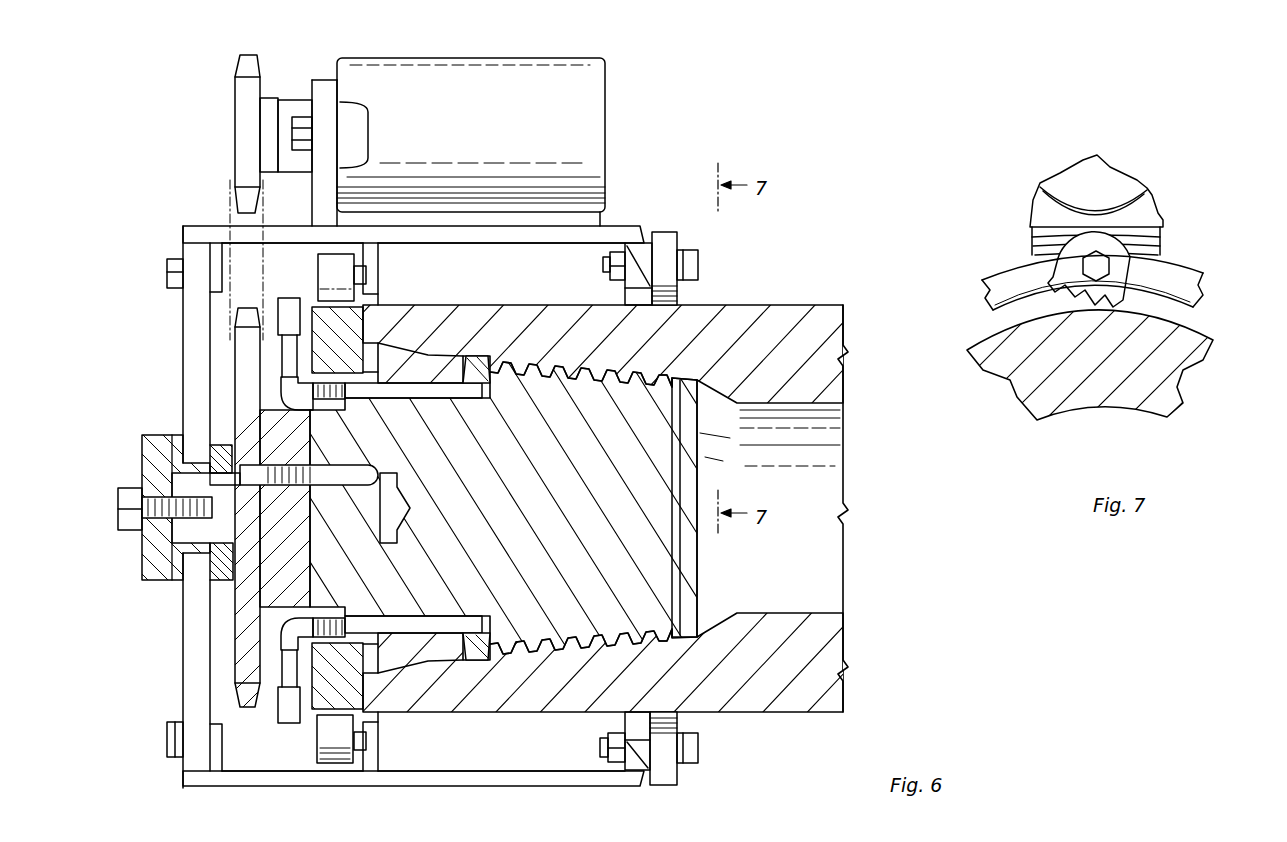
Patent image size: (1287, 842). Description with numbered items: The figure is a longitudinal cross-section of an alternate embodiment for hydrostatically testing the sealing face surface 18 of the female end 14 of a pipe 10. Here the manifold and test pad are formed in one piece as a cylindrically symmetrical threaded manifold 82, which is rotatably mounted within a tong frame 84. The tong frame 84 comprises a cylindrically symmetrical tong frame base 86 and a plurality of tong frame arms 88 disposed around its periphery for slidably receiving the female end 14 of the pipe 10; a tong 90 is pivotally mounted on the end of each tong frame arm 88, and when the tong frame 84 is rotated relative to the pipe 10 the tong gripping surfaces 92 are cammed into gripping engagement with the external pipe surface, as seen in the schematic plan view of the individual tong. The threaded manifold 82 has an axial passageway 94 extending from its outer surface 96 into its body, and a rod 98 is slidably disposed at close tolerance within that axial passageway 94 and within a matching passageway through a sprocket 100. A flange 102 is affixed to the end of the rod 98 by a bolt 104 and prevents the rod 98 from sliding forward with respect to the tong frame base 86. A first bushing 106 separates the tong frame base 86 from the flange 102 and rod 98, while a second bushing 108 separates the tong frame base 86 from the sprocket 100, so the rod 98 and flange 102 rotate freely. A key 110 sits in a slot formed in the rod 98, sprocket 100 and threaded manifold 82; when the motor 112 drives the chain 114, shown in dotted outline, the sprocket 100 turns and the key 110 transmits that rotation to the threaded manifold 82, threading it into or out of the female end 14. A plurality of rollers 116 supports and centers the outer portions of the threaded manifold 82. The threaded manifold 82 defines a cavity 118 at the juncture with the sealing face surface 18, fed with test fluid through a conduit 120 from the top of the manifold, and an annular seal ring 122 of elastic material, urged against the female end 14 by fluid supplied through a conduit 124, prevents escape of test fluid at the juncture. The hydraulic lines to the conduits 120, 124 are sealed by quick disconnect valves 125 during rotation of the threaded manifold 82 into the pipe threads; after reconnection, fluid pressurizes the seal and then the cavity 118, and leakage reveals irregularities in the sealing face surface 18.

In FIG. 6, the pipe 10 is at (797, 313).
In FIG. 7, the pipe 10 is at (1173, 367).
In FIG. 6, the female end 14 is at (517, 315).
In FIG. 6, the sealing face surface 18 is at (385, 318).
In FIG. 6, the threaded manifold 82 is at (635, 580).
In FIG. 6, the tong frame 84 is at (285, 777).
In FIG. 6, the tong frame base 86 is at (193, 328).
In FIG. 6, the tong frame arms 88 is at (620, 226).
In FIG. 7, the tong frame arms 88 is at (1177, 290).
In FIG. 6, the tong 90 is at (663, 246).
In FIG. 7, the tong 90 is at (1113, 242).
In FIG. 6, the tong gripping surfaces 92 is at (668, 297).
In FIG. 7, the tong gripping surfaces 92 is at (1063, 287).
In FIG. 6, the axial passageway 94 is at (388, 482).
In FIG. 6, the outer surface 96 is at (247, 590).
In FIG. 6, the rod 98 is at (240, 520).
In FIG. 6, the sprocket 100 is at (247, 613).
In FIG. 6, the flange 102 is at (148, 445).
In FIG. 6, the bolt 104 is at (123, 502).
In FIG. 6, the first bushing 106 is at (175, 435).
In FIG. 6, the second bushing 108 is at (210, 582).
In FIG. 6, the key 110 is at (273, 467).
In FIG. 6, the motor 112 is at (238, 107).
In FIG. 7, the motor 112 is at (1110, 183).
In FIG. 6, the chain 114 is at (247, 263).
In FIG. 6, the rollers 116 is at (320, 267).
In FIG. 6, the cavity 118 is at (372, 360).
In FIG. 6, the conduit 120 is at (348, 623).
In FIG. 6, the annular seal ring 122 is at (473, 354).
In FIG. 6, the conduit 124 is at (350, 380).
In FIG. 6, the quick disconnect valves 125 is at (290, 312).